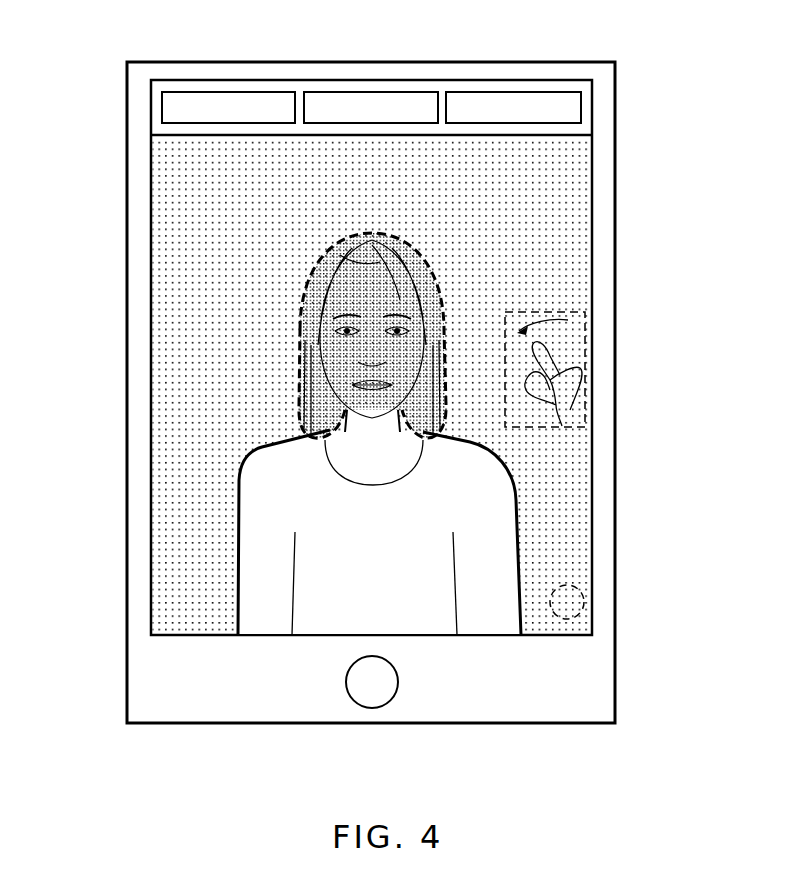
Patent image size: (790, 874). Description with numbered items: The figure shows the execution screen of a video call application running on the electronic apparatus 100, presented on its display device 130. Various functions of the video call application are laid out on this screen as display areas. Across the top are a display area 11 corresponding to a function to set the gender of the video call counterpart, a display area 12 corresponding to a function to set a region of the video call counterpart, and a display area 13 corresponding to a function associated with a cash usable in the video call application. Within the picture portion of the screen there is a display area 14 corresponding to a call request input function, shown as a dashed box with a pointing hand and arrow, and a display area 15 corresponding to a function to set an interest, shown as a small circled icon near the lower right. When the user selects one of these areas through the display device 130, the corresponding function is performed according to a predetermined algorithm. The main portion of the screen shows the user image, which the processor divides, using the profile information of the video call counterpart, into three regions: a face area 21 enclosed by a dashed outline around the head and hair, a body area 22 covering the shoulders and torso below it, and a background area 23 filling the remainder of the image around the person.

The electronic apparatus 100 is at (127, 390).
The display device 130 is at (592, 452).
The display area 11 is at (228, 92).
The display area 12 is at (370, 92).
The display area 13 is at (513, 92).
The background area 23 is at (571, 220).
The body area 22 is at (495, 527).
The face area 21 is at (375, 292).
The display area 14 is at (585, 367).
The display area 15 is at (575, 598).